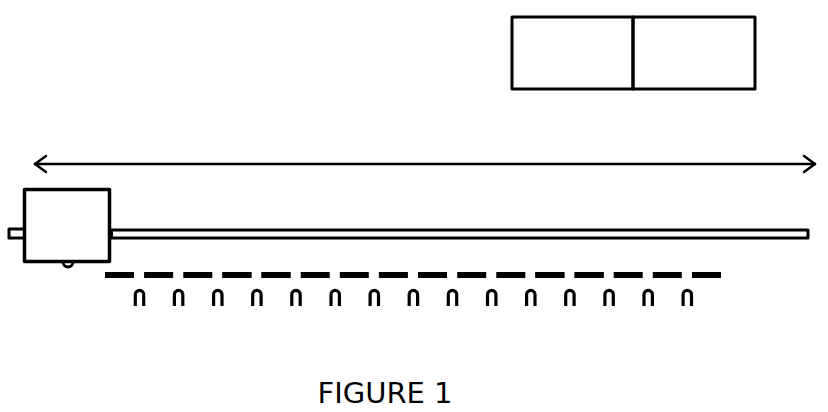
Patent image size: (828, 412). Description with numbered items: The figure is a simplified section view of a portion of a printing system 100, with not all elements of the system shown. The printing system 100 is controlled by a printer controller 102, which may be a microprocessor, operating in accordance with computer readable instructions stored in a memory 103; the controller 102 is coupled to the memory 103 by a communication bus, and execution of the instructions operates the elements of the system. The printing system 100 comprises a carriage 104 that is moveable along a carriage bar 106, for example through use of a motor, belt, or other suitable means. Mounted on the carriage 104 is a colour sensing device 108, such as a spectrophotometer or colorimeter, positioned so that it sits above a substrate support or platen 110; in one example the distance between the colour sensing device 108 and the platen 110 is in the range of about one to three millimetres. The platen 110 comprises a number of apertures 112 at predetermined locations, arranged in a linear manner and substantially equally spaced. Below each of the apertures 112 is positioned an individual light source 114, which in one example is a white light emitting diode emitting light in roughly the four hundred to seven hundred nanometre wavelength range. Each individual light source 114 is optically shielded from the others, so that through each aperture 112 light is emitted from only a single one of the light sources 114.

The printing system 100 is at (92, 123).
The printer controller 102 is at (510, 52).
The memory 103 is at (757, 52).
The carriage 104 is at (112, 221).
The carriage bar 106 is at (671, 228).
The colour sensing device 108 is at (66, 264).
The platen 110 is at (705, 272).
The apertures 112 is at (215, 272).
The individual light source 114 is at (257, 307).